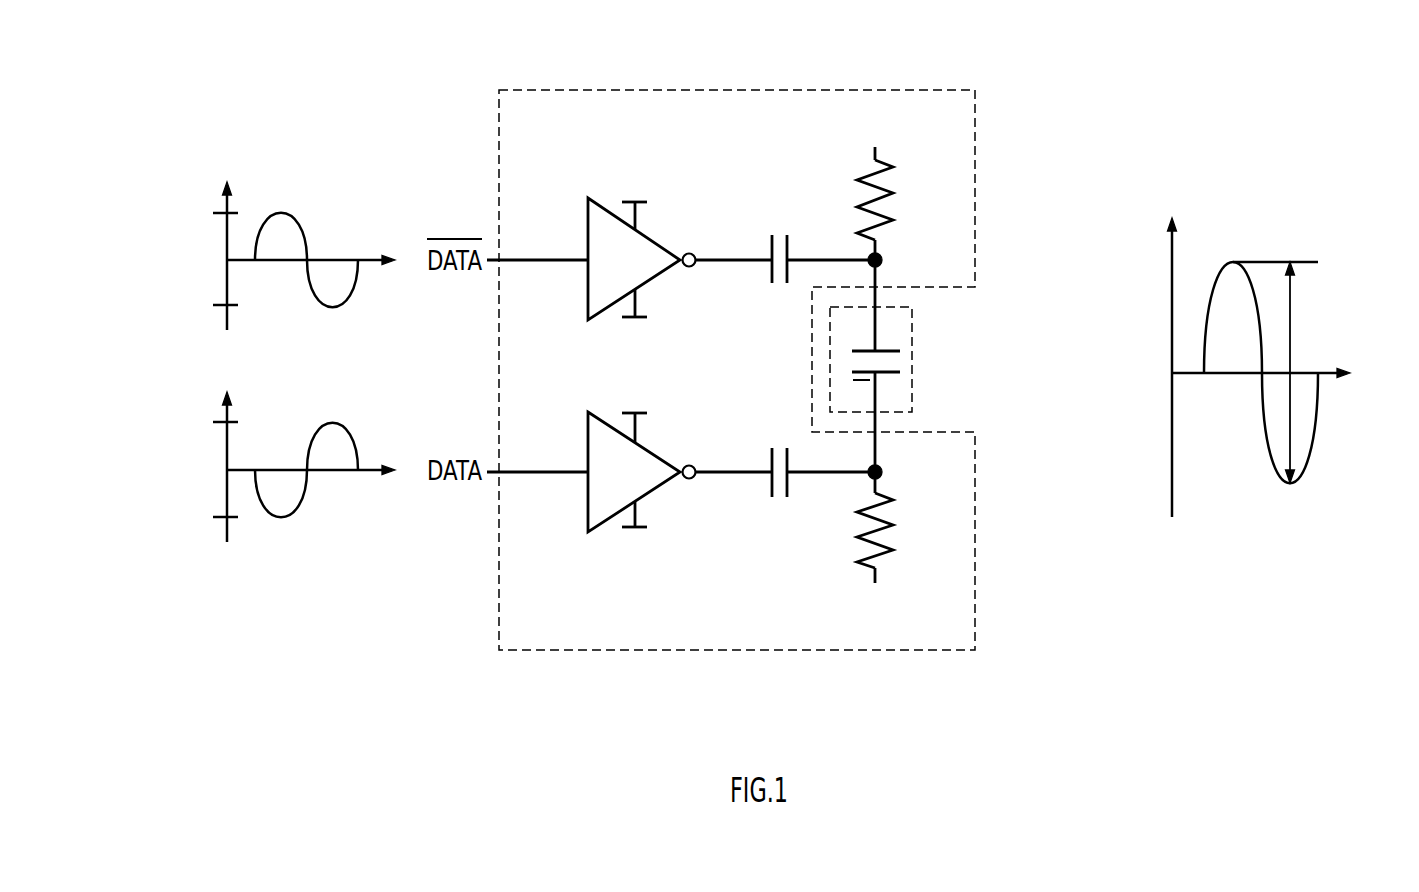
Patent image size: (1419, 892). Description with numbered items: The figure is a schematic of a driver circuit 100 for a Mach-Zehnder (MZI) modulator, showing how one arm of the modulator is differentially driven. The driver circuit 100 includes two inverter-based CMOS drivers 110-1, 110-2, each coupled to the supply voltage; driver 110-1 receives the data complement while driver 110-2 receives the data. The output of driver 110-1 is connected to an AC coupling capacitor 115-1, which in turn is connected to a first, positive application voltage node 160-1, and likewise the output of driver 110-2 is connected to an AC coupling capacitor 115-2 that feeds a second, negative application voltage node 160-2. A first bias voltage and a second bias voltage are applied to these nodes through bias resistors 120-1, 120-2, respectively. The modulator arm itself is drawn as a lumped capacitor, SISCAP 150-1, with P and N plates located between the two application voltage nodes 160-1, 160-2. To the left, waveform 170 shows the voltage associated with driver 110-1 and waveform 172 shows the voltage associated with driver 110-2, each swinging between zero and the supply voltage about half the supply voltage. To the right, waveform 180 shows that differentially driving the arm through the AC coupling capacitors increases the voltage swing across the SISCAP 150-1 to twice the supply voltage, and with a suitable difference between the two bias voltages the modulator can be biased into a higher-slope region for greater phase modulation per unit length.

The driver circuit 100 is at (558, 88).
The first inverter-based CMOS driver 110-1 is at (587, 287).
The second inverter-based CMOS driver 110-2 is at (587, 500).
The AC coupling capacitor 115-1 is at (771, 270).
The AC coupling capacitor 115-2 is at (771, 458).
The bias resistor 120-1 is at (866, 184).
The bias resistor 120-2 is at (865, 515).
The SISCAP 150-1 is at (912, 367).
The first application voltage node 160-1 is at (883, 255).
The second application voltage node 160-2 is at (884, 474).
The voltage waveform 170 is at (318, 203).
The voltage waveform 172 is at (296, 420).
The voltage waveform 180 is at (1344, 252).